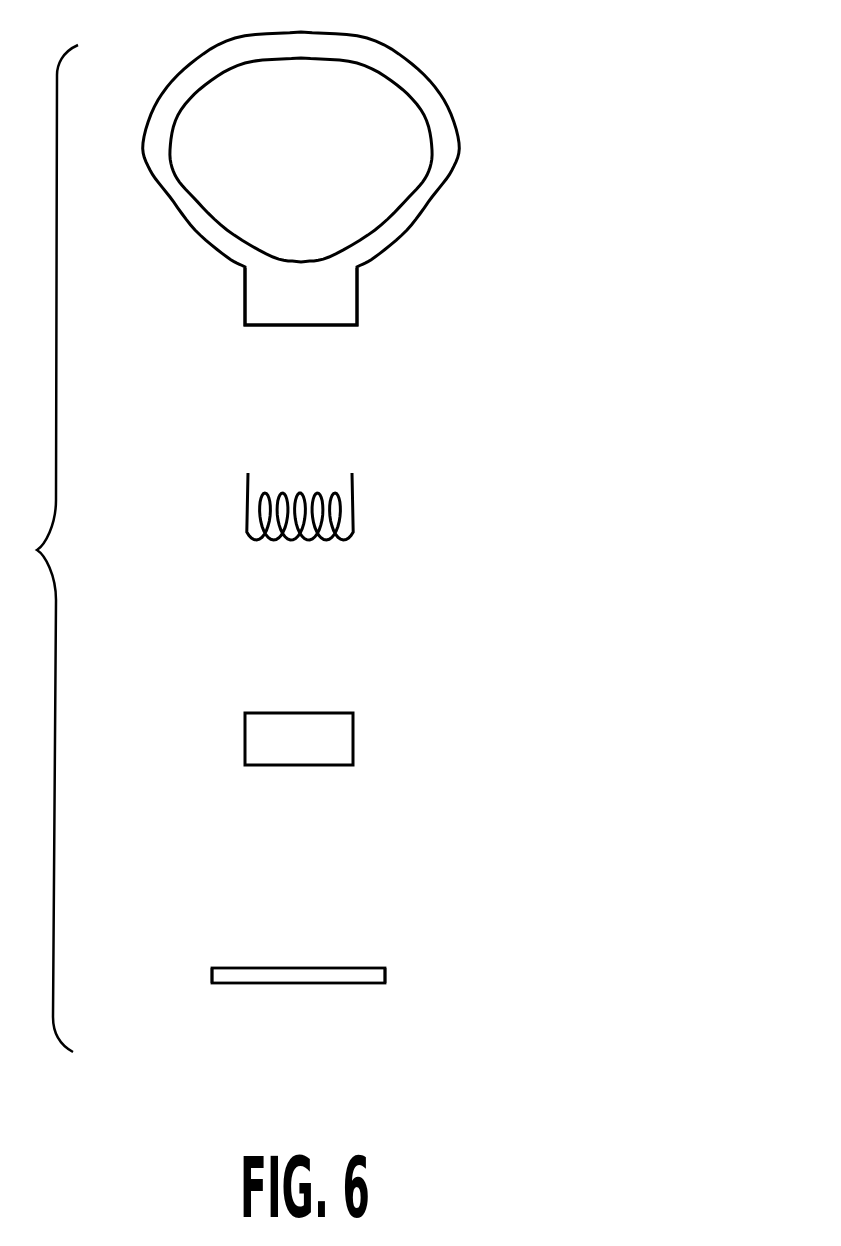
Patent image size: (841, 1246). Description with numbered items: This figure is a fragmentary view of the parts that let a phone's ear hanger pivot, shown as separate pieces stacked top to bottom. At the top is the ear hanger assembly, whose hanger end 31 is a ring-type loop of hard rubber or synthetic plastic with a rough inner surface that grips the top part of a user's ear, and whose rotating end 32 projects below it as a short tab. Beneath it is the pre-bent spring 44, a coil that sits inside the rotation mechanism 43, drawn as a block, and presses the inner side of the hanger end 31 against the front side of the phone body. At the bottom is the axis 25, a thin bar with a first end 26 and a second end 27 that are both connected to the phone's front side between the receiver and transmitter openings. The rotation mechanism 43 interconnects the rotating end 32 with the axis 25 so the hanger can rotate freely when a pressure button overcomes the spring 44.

The hanger end 31 is at (418, 72).
The rotating end 32 is at (357, 300).
The pre-bent spring 44 is at (353, 517).
The rotation mechanism 43 is at (353, 745).
The axis 25 is at (300, 967).
The first end 26 is at (212, 978).
The second end 27 is at (385, 978).